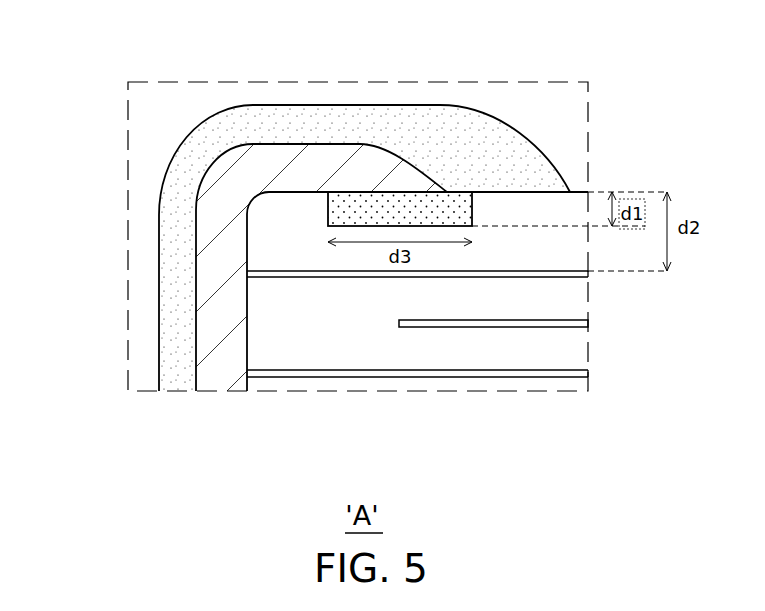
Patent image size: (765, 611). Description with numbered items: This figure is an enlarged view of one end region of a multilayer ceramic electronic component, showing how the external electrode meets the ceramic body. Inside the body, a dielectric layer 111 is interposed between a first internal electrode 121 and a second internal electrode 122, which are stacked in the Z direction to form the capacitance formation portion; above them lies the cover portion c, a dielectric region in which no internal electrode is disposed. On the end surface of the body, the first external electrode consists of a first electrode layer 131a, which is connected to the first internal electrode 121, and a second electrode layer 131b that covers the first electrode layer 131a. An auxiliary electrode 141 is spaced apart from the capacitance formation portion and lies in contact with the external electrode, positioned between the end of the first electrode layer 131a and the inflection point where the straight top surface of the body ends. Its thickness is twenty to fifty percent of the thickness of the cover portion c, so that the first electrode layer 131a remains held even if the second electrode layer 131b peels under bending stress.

The auxiliary electrode 141 is at (380, 201).
The second electrode layer 131b is at (173, 302).
The first electrode layer 131a is at (205, 347).
The cover portion c is at (255, 248).
The first internal electrode 121 is at (287, 273).
The dielectric layer 111 is at (418, 350).
The second internal electrode 122 is at (529, 323).